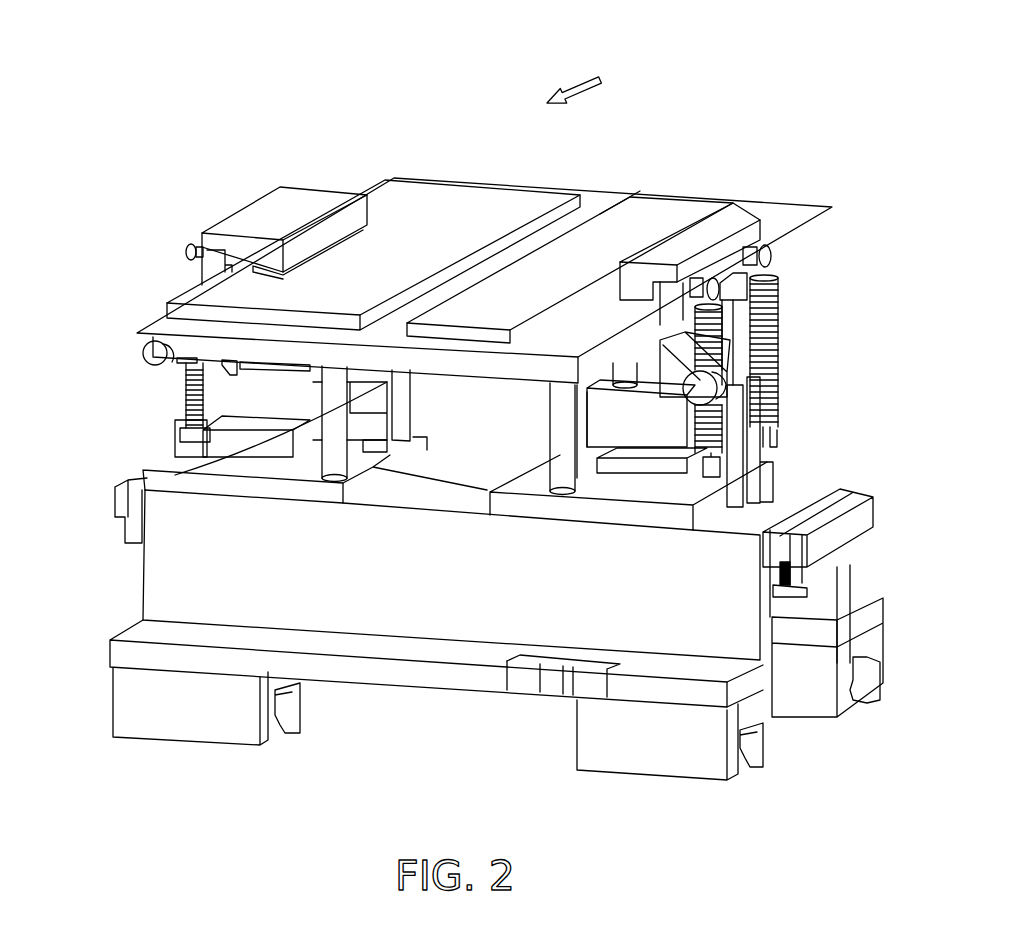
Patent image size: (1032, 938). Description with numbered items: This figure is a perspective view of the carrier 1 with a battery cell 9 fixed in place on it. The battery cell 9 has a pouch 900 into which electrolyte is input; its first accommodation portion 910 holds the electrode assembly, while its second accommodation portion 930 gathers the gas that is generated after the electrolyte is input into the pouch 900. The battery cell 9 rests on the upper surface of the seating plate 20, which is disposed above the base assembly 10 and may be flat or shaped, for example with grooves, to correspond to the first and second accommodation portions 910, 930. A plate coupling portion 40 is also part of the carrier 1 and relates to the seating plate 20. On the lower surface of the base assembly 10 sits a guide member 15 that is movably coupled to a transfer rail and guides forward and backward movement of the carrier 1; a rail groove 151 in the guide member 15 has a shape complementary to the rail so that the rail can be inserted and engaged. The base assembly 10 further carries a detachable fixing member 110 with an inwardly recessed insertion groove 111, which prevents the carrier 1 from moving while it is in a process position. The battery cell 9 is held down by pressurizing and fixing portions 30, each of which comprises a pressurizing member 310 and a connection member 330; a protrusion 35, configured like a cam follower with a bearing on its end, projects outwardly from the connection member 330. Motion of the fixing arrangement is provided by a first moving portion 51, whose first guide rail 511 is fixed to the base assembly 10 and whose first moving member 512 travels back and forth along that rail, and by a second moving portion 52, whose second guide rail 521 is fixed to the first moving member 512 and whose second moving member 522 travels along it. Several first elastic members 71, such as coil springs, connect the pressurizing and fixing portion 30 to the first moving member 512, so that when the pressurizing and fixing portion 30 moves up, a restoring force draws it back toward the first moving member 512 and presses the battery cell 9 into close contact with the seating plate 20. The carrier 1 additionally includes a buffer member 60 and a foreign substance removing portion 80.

The carrier 1 is at (438, 37).
The battery cell 9 is at (420, 155).
The pouch 900 is at (600, 200).
The first accommodation portion 910 is at (450, 200).
The second accommodation portion 930 is at (657, 220).
The pressurizing and fixing portion 30 is at (232, 190).
The pressurizing member 310 is at (703, 230).
The connection member 330 is at (750, 223).
The seating plate 20 is at (140, 341).
The first moving portion 51 is at (53, 406).
The first guide rail 511 is at (147, 474).
The first moving member 512 is at (372, 402).
The plate coupling portion 40 is at (557, 417).
The protrusion 35 is at (727, 395).
The second moving portion 52 is at (868, 328).
The second guide rail 521 is at (640, 405).
The second moving member 522 is at (718, 388).
The first elastic member 71 is at (773, 288).
The base assembly 10 is at (765, 623).
The fixing member 110 is at (593, 683).
The insertion groove 111 is at (557, 682).
The guide member 15 is at (188, 712).
The rail groove 151 is at (292, 707).
The buffer member 60 is at (857, 528).
The foreign substance removing portion 80 is at (780, 585).